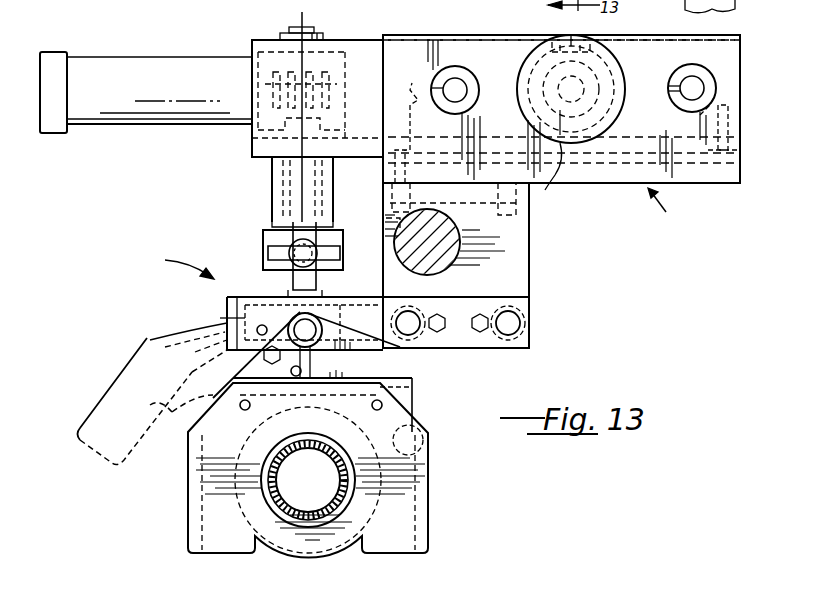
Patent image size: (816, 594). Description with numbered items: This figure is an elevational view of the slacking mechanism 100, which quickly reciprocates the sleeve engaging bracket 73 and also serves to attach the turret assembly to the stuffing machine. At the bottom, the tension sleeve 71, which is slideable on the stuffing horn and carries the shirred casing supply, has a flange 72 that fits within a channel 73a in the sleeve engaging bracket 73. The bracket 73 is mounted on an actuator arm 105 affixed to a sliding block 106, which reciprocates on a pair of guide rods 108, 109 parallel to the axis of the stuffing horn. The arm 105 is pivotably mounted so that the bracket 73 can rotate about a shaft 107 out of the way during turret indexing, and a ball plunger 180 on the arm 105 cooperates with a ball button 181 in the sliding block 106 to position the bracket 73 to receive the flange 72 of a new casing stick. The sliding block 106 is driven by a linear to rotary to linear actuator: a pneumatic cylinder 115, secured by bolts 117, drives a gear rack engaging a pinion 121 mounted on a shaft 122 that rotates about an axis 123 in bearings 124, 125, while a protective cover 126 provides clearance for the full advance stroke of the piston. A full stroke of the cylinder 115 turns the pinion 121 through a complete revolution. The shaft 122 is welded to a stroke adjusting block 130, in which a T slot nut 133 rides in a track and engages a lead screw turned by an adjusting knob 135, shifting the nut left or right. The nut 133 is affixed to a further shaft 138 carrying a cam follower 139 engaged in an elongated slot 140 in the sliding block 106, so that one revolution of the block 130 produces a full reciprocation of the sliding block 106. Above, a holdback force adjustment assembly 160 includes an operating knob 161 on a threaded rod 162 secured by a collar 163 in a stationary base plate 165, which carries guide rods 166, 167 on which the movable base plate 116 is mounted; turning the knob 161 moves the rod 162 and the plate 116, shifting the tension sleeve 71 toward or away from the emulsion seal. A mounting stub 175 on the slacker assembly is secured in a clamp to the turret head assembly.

The tension sleeve 71 is at (272, 502).
The flange 72 is at (260, 540).
The sleeve engaging bracket 73 is at (116, 375).
The channel 73a is at (418, 422).
The slacking mechanism 100 is at (171, 264).
The actuator arm 105 is at (414, 370).
The sliding block 106 is at (226, 318).
The shaft 107 is at (312, 340).
The guide rod 108 is at (413, 318).
The guide rod 109 is at (518, 318).
The pneumatic cylinder 115 is at (355, 42).
The movable base plate 116 is at (252, 148).
The bolts 117 is at (748, 88).
The pinion 121 is at (252, 84).
The shaft 122 is at (306, 30).
The axis 123 is at (298, 32).
The bearing 124 is at (282, 34).
The bearing 125 is at (272, 178).
The protective cover 126 is at (147, 130).
The stroke adjusting block 130 is at (263, 240).
The T slot nut 133 is at (283, 272).
The adjusting knob 135 is at (290, 247).
The shaft 138 is at (334, 256).
The cam follower 139 is at (328, 300).
The elongated slot 140 is at (227, 300).
The holdback force adjustment assembly 160 is at (672, 209).
The operating knob 161 is at (558, 188).
The threaded rod 162 is at (598, 72).
The collar 163 is at (537, 38).
The stationary base plate 165 is at (695, 177).
The guide rod 166 is at (458, 82).
The guide rod 167 is at (684, 100).
The mounting stub 175 is at (460, 235).
The ball plunger 180 is at (258, 360).
The ball button 181 is at (240, 335).